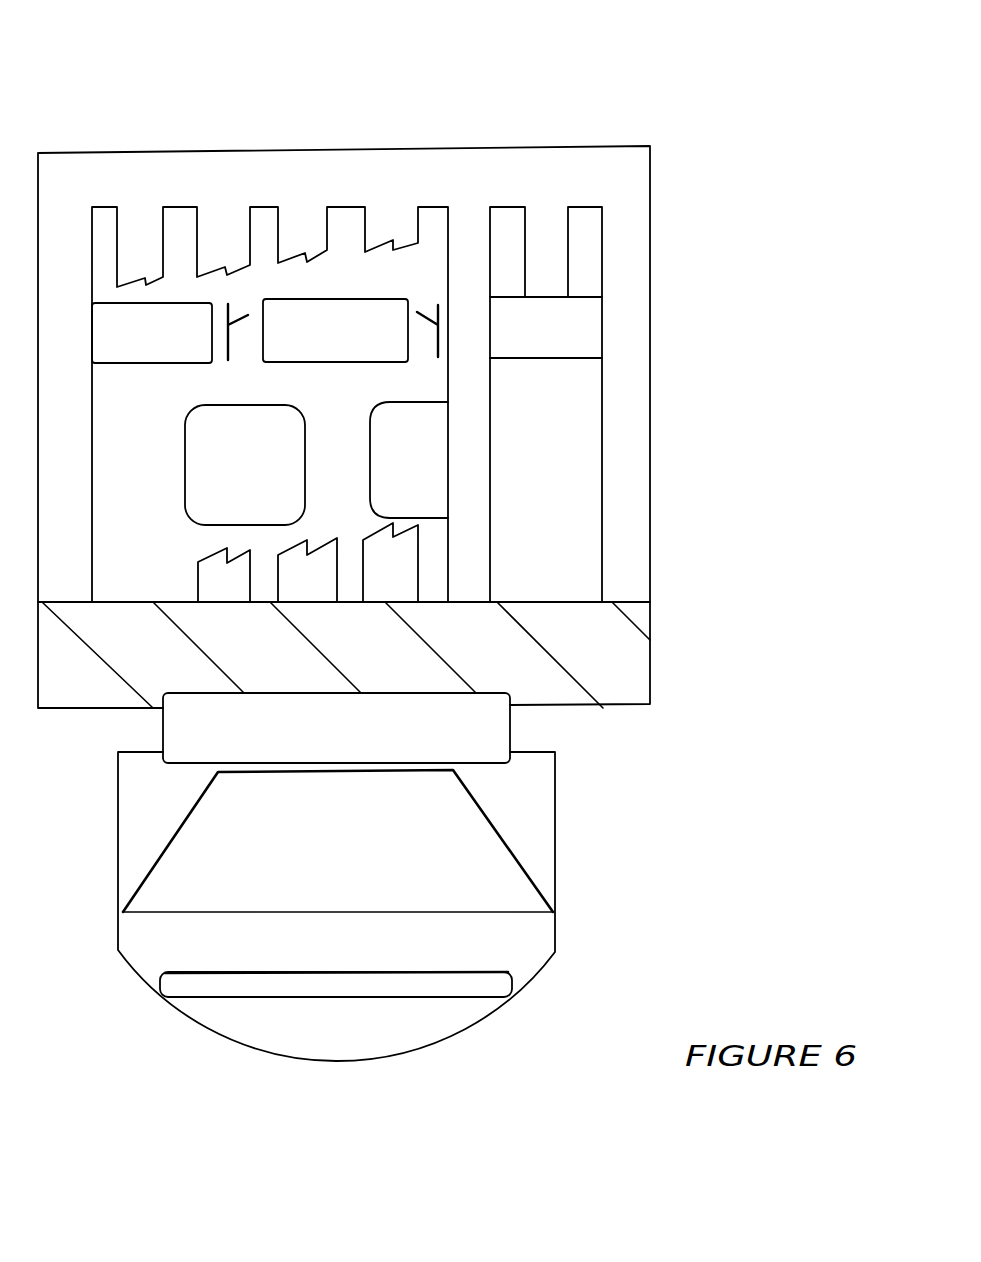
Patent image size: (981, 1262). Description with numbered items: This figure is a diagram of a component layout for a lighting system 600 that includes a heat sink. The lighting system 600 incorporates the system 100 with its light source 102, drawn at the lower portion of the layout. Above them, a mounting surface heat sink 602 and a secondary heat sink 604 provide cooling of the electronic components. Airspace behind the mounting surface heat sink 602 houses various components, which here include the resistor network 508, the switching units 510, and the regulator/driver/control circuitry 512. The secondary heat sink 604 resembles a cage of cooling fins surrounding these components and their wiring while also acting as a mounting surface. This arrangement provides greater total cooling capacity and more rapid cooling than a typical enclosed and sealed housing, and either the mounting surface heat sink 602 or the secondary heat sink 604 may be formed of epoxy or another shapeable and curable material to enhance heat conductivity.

The lighting system 600 is at (667, 30).
The mounting surface heat sink 602 is at (650, 642).
The secondary heat sink 604 is at (438, 387).
The switching units 510 is at (175, 365).
The resistor network 508 is at (347, 363).
The regulator/driver/control circuitry 512 is at (185, 445).
The light source 102 is at (510, 722).
The system 100 is at (557, 811).